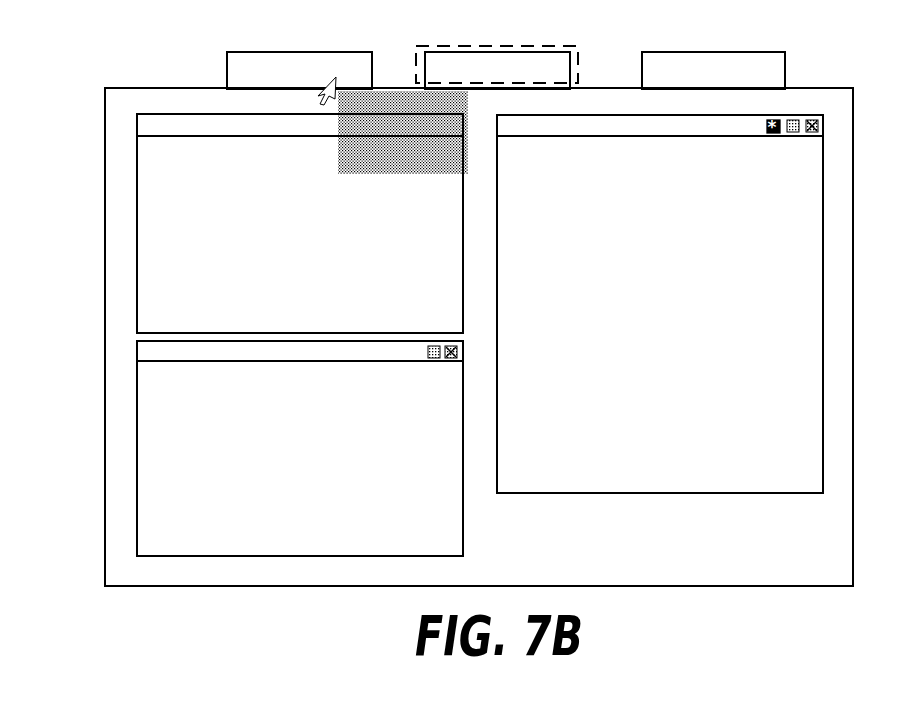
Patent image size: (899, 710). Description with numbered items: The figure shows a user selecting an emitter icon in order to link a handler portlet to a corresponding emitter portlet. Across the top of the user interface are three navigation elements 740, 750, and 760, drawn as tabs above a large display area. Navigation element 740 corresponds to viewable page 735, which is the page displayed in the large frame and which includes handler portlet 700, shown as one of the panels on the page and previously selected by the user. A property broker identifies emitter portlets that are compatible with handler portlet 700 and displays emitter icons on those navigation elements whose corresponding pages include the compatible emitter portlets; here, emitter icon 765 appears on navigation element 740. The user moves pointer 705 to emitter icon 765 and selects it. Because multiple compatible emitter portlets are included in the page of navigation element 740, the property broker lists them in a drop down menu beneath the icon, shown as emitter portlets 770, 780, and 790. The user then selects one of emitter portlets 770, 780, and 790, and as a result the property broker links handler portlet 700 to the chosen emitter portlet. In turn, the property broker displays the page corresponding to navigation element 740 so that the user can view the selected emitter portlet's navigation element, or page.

The handler portlet 700 is at (246, 448).
The pointer 705 is at (293, 94).
The viewable page 735 is at (441, 337).
The navigation element 740 is at (273, 55).
The navigation element 750 is at (512, 46).
The navigation element 760 is at (713, 55).
The emitter icon 765 is at (378, 54).
The emitter portlet 770 is at (468, 118).
The emitter portlet 780 is at (468, 164).
The emitter portlet 790 is at (468, 191).